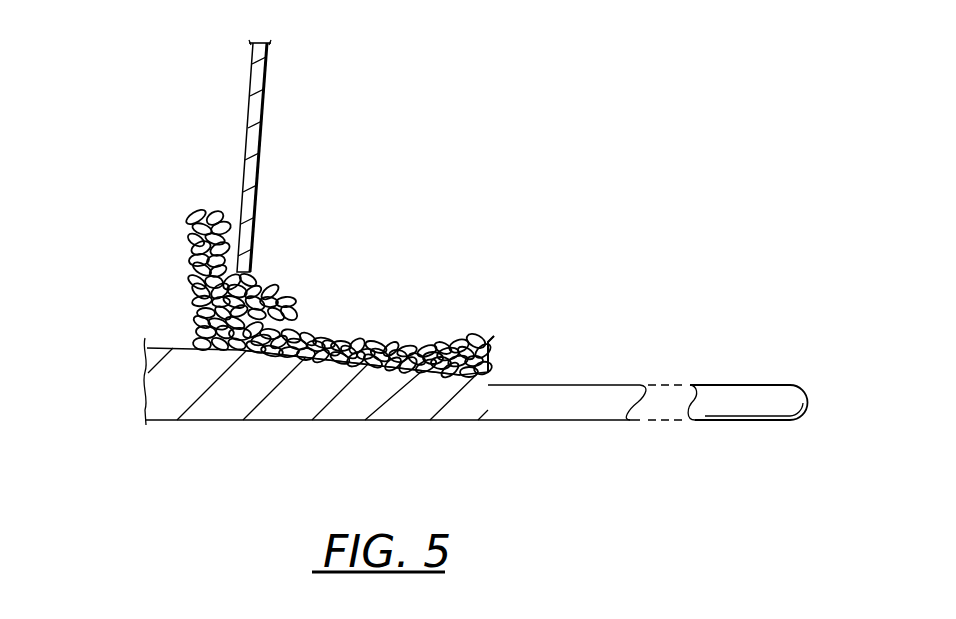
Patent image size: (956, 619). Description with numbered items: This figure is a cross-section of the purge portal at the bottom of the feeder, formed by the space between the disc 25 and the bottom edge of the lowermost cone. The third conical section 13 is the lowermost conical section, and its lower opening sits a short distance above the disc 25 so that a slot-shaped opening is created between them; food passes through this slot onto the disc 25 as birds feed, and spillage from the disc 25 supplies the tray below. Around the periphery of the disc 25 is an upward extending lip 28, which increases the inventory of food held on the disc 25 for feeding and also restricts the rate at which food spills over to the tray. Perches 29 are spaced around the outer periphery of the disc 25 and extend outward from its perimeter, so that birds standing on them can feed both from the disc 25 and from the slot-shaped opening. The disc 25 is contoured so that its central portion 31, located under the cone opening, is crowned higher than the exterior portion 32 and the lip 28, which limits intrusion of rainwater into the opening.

The third conical section 13 is at (258, 172).
The disc 25 is at (408, 408).
The upward extending lip 28 is at (494, 336).
The perches 29 is at (612, 390).
The central portion 31 is at (202, 325).
The exterior portion 32 is at (347, 362).